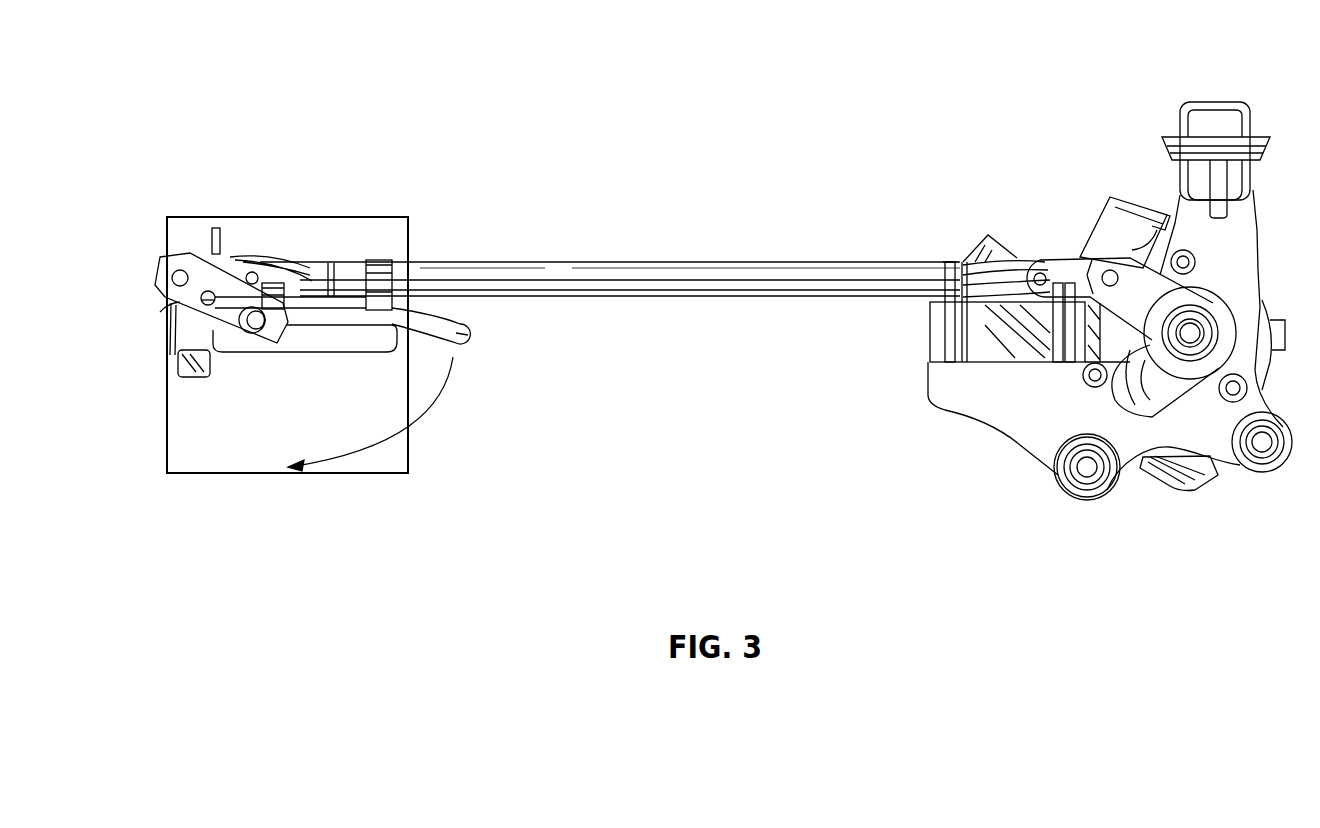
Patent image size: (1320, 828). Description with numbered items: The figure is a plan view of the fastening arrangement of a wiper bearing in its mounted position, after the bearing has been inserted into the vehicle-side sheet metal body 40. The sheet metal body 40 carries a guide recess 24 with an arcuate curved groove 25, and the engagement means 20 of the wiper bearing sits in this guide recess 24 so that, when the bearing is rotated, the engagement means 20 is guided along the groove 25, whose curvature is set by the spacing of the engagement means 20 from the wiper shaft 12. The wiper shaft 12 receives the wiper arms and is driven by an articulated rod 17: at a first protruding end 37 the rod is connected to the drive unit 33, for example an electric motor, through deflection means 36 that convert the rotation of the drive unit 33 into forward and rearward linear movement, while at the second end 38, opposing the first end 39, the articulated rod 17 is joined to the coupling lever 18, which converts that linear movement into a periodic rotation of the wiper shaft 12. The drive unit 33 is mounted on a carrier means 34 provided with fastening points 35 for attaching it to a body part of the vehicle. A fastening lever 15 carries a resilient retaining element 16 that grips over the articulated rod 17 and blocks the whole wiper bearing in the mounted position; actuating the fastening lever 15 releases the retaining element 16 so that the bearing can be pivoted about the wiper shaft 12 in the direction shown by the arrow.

The wiper shaft 12 is at (250, 320).
The fastening lever 15 is at (470, 340).
The retaining element 16 is at (378, 285).
The articulated rod 17 is at (680, 275).
The coupling lever 18 is at (190, 300).
The engagement means 20 is at (185, 372).
The guide recess 24 is at (210, 252).
The arcuate curved groove 25 is at (172, 317).
The drive unit 33 is at (998, 323).
The carrier means 34 is at (1027, 410).
The fastening points 35 is at (1087, 470).
The deflection means 36 is at (1113, 263).
The first protruding end 37 is at (1085, 267).
The second end 38 is at (157, 258).
The first end 39 is at (1083, 260).
The sheet metal body 40 is at (248, 448).